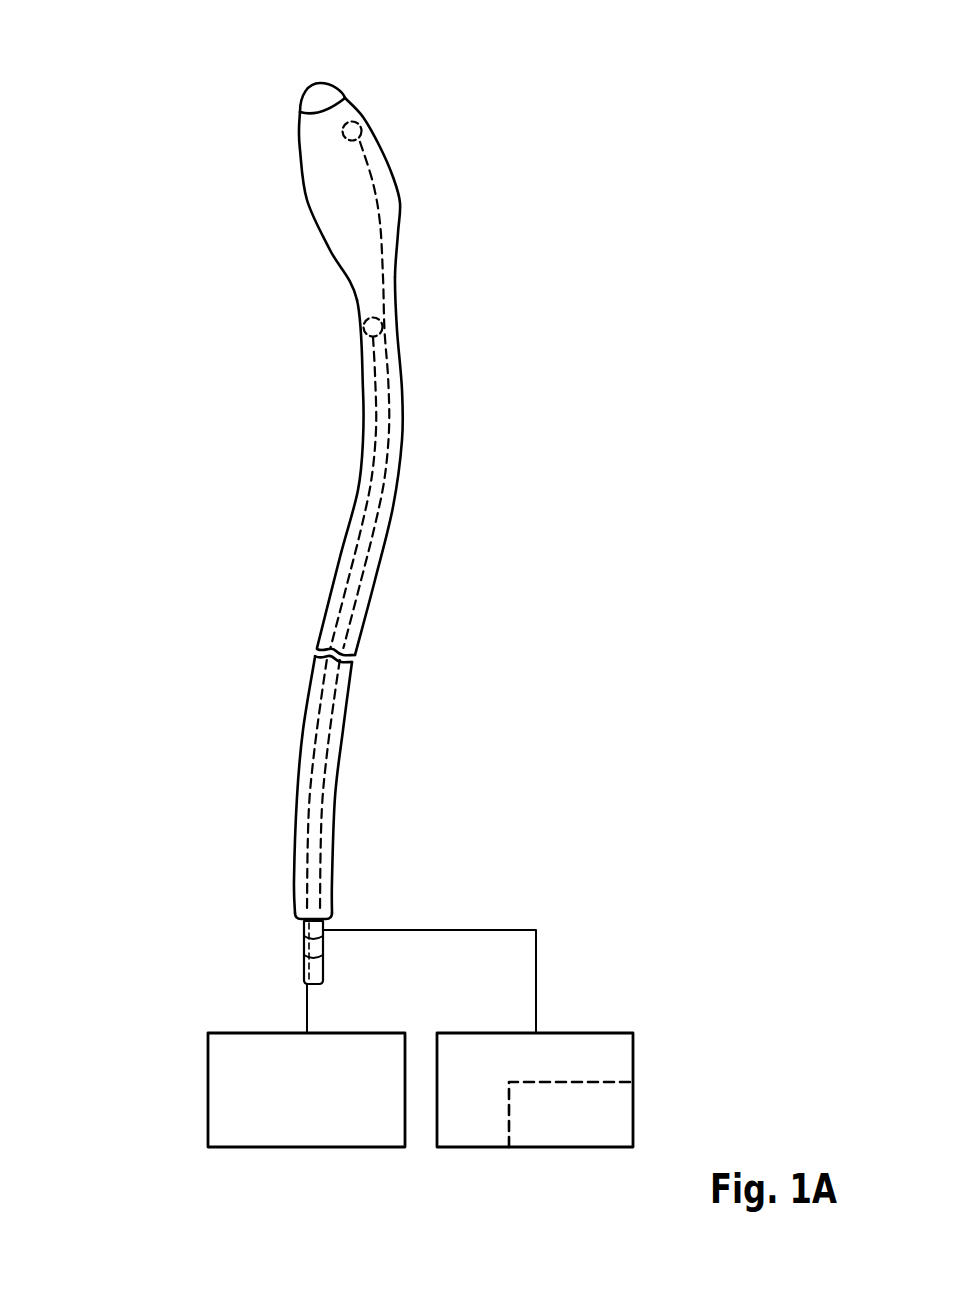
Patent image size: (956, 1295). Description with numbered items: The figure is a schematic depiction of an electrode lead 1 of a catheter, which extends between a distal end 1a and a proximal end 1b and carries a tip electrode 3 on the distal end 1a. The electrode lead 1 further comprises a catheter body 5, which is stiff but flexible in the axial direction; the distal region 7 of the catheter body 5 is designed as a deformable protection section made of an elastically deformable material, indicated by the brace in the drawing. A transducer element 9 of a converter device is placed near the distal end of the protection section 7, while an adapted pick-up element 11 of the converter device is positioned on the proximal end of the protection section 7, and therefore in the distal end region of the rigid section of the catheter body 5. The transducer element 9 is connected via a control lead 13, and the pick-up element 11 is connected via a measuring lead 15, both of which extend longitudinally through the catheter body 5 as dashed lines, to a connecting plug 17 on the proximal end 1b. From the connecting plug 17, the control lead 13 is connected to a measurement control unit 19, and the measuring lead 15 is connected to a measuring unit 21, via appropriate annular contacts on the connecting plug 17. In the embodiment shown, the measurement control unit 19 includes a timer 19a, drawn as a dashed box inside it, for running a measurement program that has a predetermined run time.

The electrode lead 1 is at (190, 110).
The distal end 1a is at (321, 82).
The proximal end 1b is at (327, 915).
The tip electrode 3 is at (312, 102).
The catheter body 5 is at (384, 538).
The distal region 7 is at (432, 90).
The transducer element 9 is at (341, 134).
The pick-up element 11 is at (363, 328).
The control lead 13 is at (388, 422).
The measuring lead 15 is at (370, 495).
The connecting plug 17 is at (313, 948).
The measurement control unit 19 is at (579, 1046).
The timer 19a is at (622, 1120).
The measuring unit 21 is at (220, 1090).